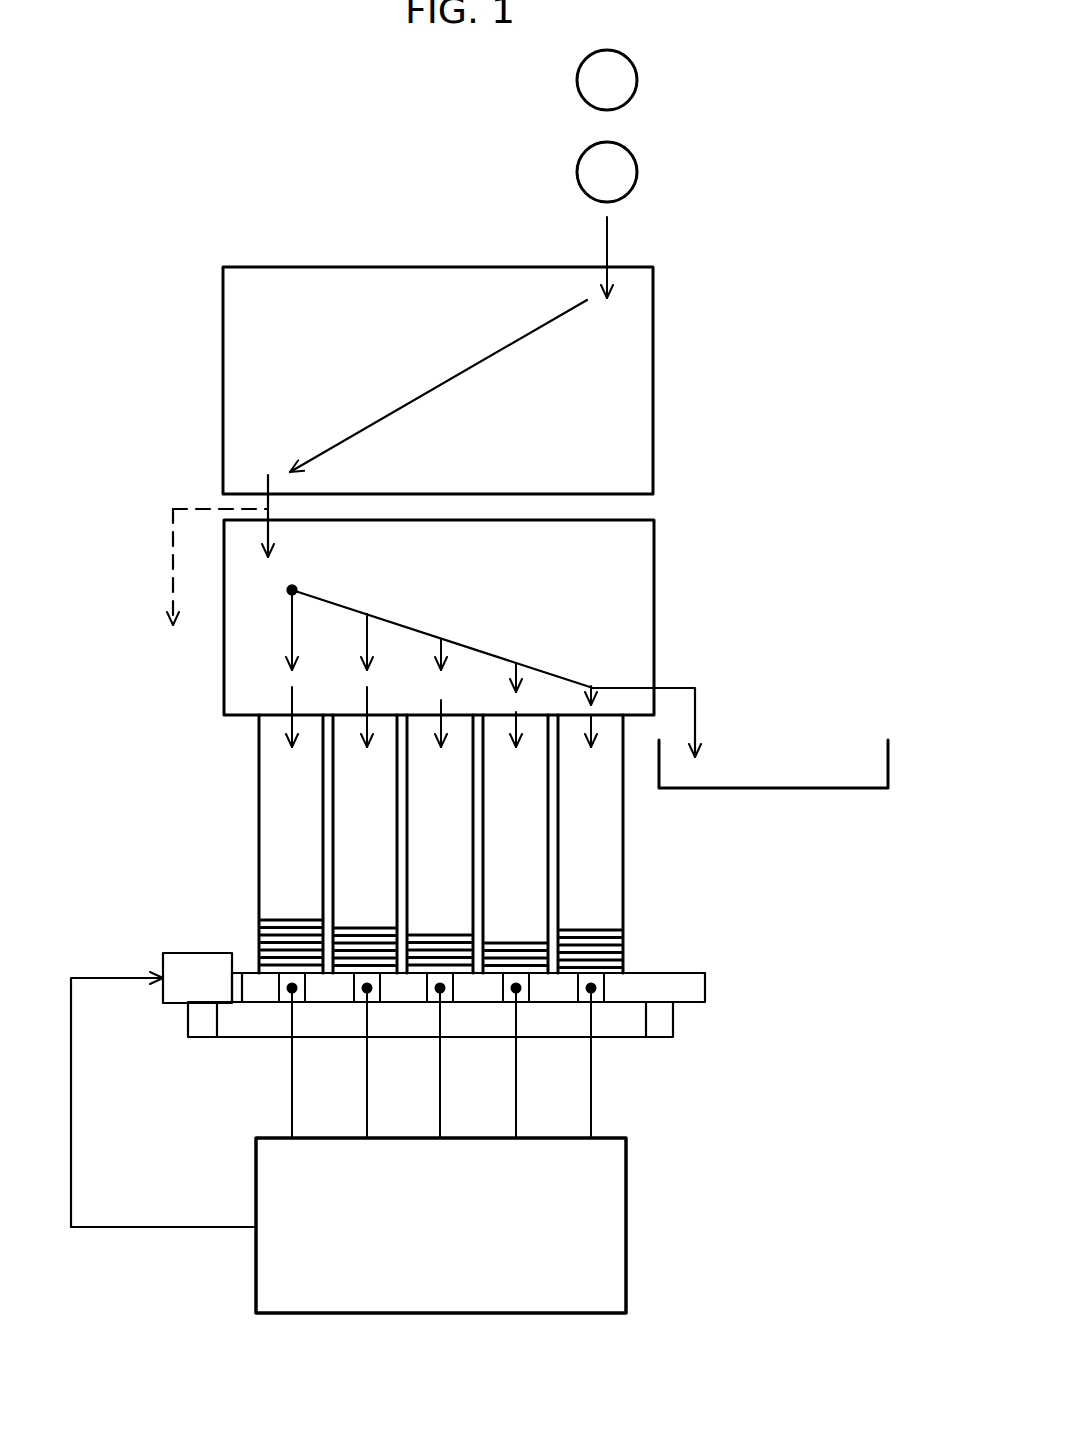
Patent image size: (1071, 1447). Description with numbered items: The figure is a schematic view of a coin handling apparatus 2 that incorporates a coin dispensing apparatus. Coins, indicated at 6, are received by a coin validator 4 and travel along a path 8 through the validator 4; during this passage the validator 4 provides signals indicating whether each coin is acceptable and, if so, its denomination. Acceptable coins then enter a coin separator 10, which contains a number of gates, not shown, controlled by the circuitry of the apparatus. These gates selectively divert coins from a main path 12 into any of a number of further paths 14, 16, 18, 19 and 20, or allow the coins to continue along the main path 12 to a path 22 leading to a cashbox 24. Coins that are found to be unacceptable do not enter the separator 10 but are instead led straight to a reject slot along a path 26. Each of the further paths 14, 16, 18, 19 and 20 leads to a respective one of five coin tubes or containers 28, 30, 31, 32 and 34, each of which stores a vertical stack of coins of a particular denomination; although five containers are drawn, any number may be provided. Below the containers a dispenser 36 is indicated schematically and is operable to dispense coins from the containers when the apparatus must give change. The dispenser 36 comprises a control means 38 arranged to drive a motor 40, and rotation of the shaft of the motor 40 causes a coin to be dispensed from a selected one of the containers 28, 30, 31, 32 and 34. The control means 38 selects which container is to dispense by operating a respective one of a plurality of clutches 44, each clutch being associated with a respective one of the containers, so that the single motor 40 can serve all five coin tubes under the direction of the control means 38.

The coin handling apparatus 2 is at (170, 389).
The coin validator 4 is at (645, 403).
The coins 6 is at (625, 78).
The path 8 is at (420, 393).
The coin separator 10 is at (640, 580).
The main path 12 is at (330, 601).
The further path 14 is at (292, 621).
The further path 16 is at (372, 645).
The further path 18 is at (446, 660).
The further path 19 is at (521, 682).
The further path 20 is at (596, 700).
The path 22 is at (697, 705).
The cashbox 24 is at (863, 790).
The path 26 is at (172, 550).
The coin tube 28 is at (309, 832).
The coin tube 30 is at (384, 832).
The coin tube 31 is at (457, 832).
The coin tube 32 is at (533, 832).
The coin tube 34 is at (608, 832).
The dispenser 36 is at (643, 954).
The control means 38 is at (627, 1218).
The motor 40 is at (195, 970).
The clutches 44 is at (292, 996).